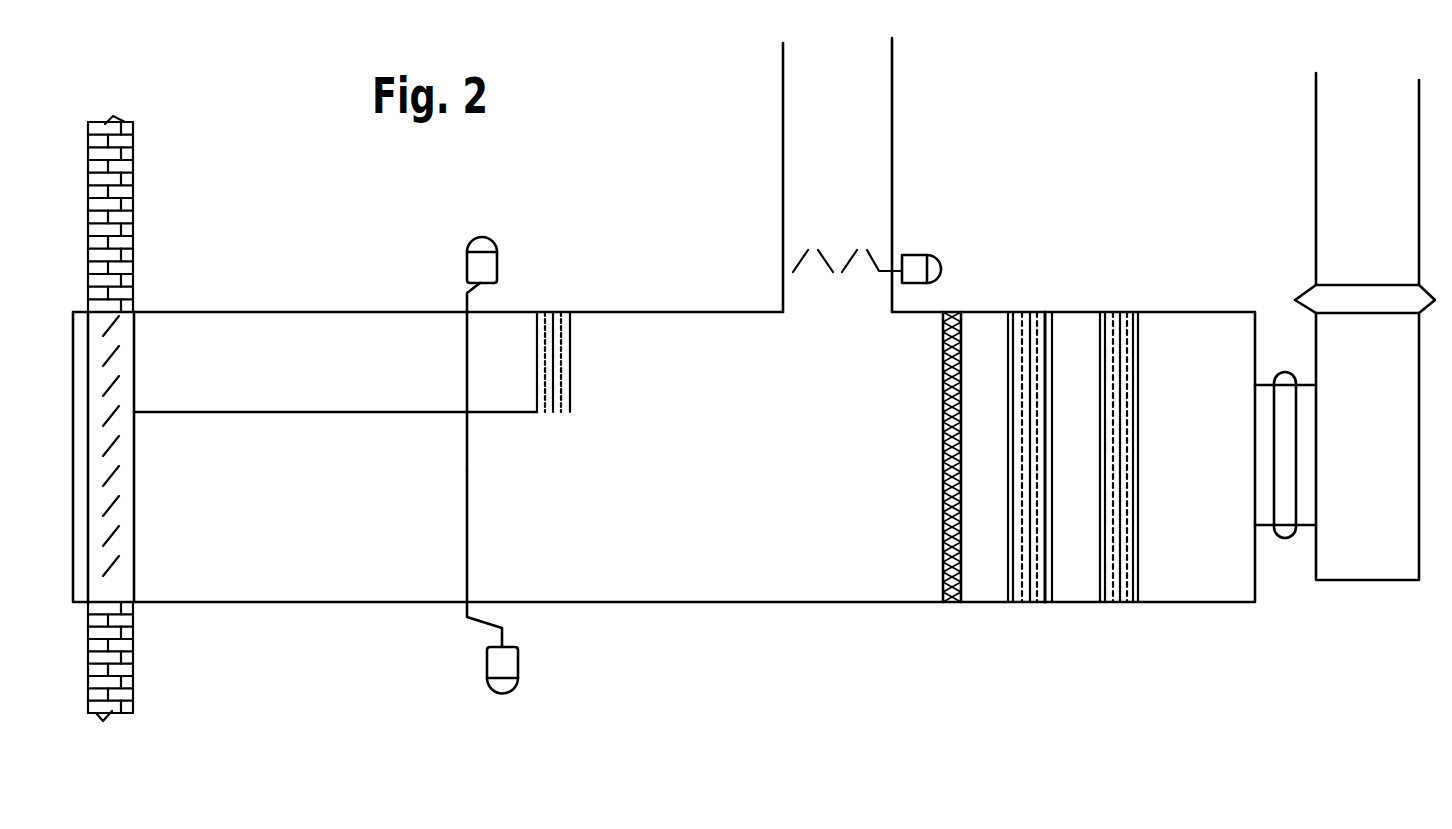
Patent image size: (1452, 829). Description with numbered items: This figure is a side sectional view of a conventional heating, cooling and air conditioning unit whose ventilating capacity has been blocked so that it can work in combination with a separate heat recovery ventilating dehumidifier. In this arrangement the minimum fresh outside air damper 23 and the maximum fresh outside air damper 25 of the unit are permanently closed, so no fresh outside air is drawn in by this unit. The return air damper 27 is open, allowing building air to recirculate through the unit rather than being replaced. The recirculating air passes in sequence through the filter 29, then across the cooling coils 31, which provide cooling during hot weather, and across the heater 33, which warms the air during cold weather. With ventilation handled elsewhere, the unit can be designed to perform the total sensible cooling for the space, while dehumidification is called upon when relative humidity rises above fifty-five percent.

The minimum fresh outside air damper 23 is at (452, 370).
The maximum fresh outside air damper 25 is at (450, 480).
The return air damper 27 is at (836, 293).
The filter 29 is at (925, 473).
The cooling coils 31 is at (1032, 620).
The heater 33 is at (1124, 620).